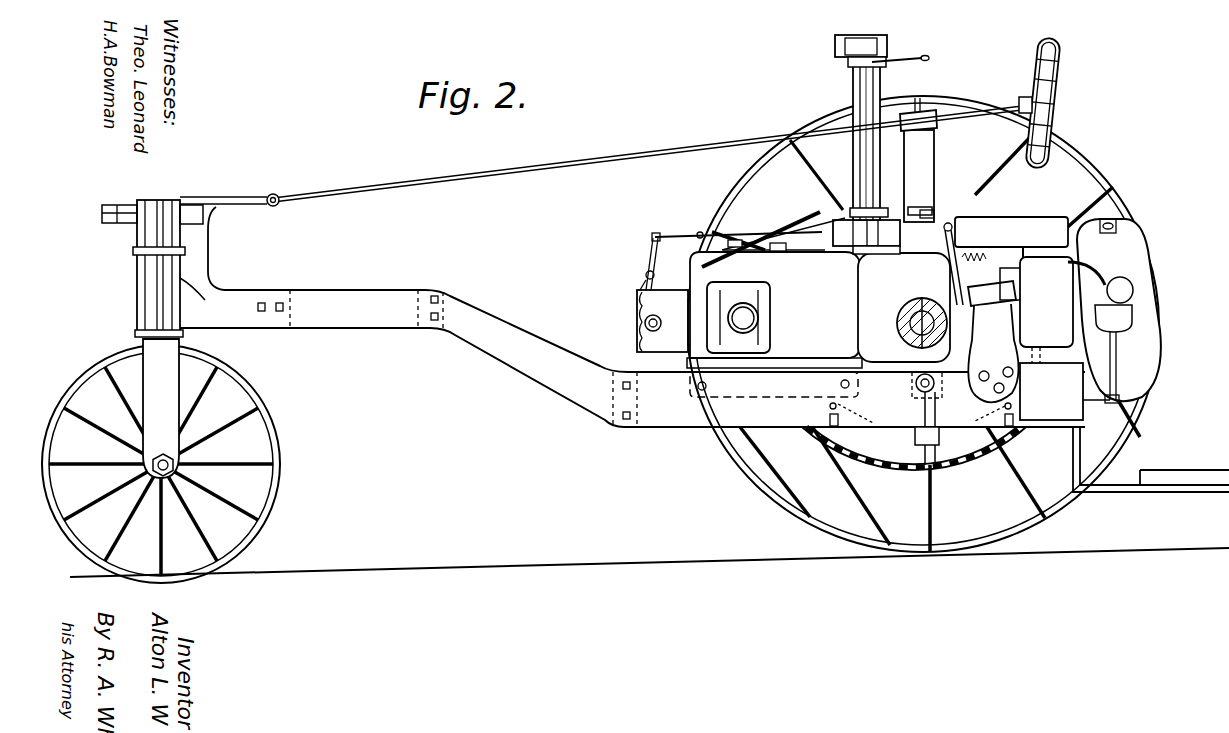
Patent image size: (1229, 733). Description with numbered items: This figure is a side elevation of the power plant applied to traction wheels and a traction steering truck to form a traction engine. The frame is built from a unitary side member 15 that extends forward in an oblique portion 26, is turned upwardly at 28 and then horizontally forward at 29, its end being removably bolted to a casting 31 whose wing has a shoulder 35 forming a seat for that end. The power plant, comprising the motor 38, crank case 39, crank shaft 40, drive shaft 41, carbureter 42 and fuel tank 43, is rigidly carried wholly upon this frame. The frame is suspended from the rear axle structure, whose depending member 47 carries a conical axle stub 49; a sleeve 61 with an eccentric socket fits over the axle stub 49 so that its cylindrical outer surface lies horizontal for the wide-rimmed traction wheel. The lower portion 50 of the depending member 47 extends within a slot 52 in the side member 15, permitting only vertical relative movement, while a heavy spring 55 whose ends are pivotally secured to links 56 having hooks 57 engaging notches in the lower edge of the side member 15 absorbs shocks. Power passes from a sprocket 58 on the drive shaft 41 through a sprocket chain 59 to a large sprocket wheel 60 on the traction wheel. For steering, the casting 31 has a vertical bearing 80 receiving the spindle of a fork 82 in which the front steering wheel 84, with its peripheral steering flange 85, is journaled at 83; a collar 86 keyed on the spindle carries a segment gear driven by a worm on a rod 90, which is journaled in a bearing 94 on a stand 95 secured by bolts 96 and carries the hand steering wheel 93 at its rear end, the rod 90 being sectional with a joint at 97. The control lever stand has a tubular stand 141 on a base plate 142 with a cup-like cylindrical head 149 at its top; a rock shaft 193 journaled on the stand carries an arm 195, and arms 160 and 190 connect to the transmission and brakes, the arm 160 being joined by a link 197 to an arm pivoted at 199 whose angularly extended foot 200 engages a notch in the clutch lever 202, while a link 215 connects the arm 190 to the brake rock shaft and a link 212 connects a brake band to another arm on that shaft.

The side frame member 15 is at (668, 425).
The oblique portion 26 is at (498, 322).
The upward turn 28 is at (593, 423).
The horizontal forward turn 29 is at (445, 330).
The casting 31 is at (206, 308).
The shoulder 35 is at (256, 329).
The motor 38 is at (965, 335).
The crank case 39 is at (818, 362).
The crank shaft 40 is at (750, 318).
The drive shaft 41 is at (645, 323).
The carbureter 42 is at (1122, 322).
The fuel tank 43 is at (1130, 240).
The depending member 47 is at (892, 300).
The axle stub 49 is at (922, 312).
The lower portion 50 is at (938, 400).
The slot 52 is at (937, 378).
The spring 55 is at (903, 455).
The link 56 is at (815, 430).
The hook 57 is at (852, 440).
The sprocket 58 is at (630, 315).
The sprocket chain 59 is at (646, 275).
The large sprocket wheel 60 is at (830, 195).
The sleeve 61 is at (890, 326).
The vertical bearing 80 is at (135, 255).
The fork 82 is at (155, 372).
The journal 83 is at (178, 470).
The steering wheel 84 is at (245, 396).
The peripheral steering flange 85 is at (275, 459).
The collar 86 is at (140, 232).
The rod 90 is at (343, 189).
The steering wheel 93 is at (1056, 90).
The bearing 94 is at (920, 115).
The stand 95 is at (922, 190).
The bolts 96 is at (920, 213).
The universal joint 97 is at (273, 193).
The tubular stand 141 is at (852, 85).
The base plate 142 is at (858, 290).
The cup-like cylindrical head 149 is at (890, 44).
The arm 160 is at (850, 245).
The arm 190 is at (805, 240).
The rock shaft 193 is at (876, 90).
The arm 195 is at (926, 57).
The link 197 is at (770, 245).
The pivot 199 is at (750, 245).
The angularly extended foot 200 is at (735, 240).
The clutch lever 202 is at (705, 266).
The link 212 is at (648, 262).
The link 215 is at (688, 235).